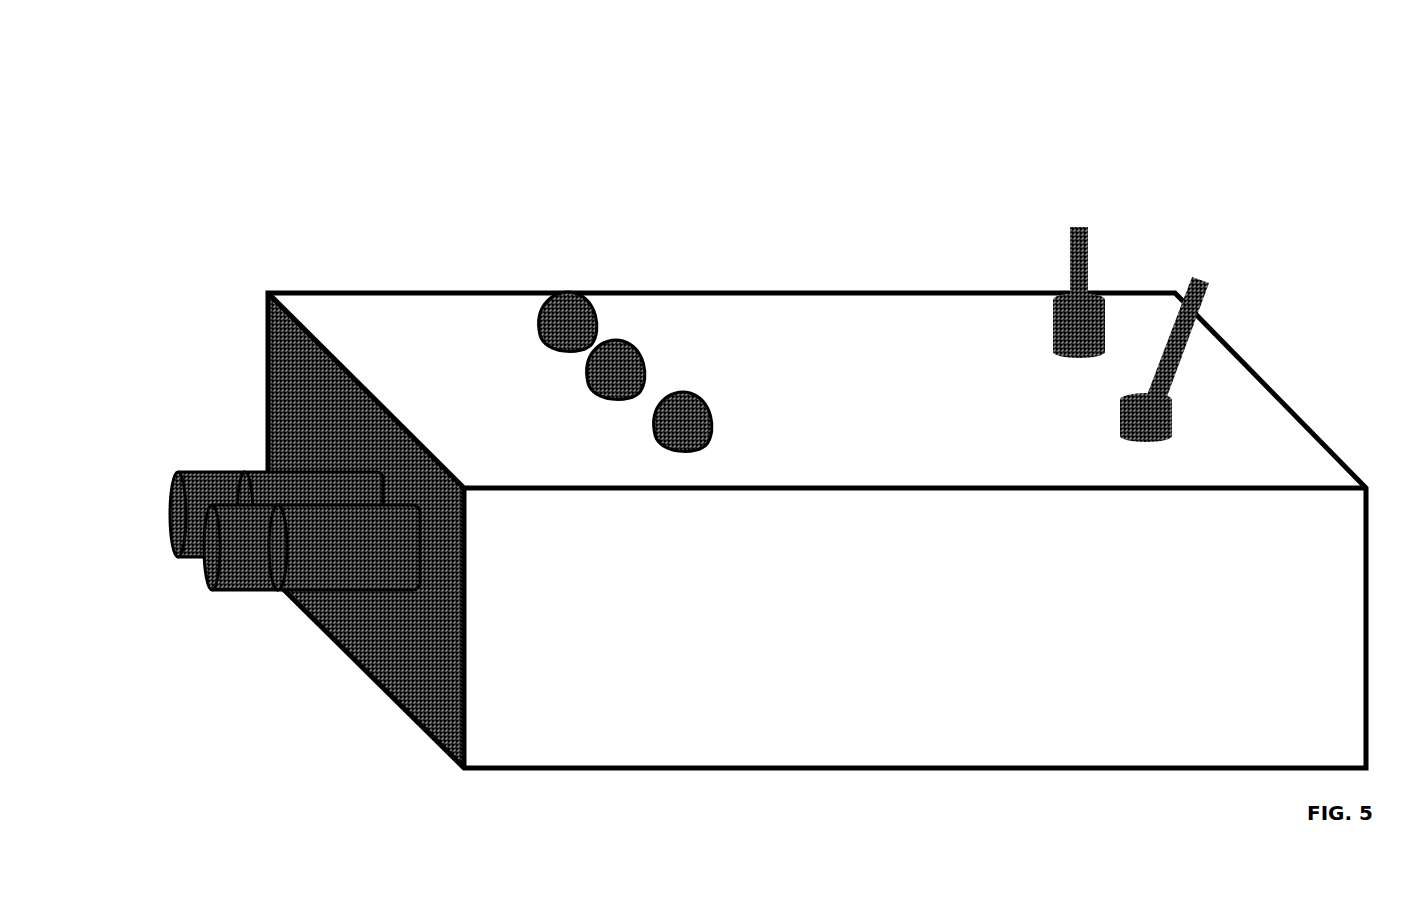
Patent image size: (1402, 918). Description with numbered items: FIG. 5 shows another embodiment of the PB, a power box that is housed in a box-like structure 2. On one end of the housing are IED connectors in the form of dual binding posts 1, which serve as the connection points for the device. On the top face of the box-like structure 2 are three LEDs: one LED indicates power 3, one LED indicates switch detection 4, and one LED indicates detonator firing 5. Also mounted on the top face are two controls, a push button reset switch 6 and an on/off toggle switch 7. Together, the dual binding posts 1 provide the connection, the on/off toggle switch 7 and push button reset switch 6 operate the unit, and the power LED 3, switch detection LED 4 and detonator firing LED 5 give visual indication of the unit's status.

The dual binding posts 1 is at (253, 467).
The box-like structure 2 is at (433, 290).
The power LED 3 is at (565, 305).
The switch detection LED 4 is at (615, 387).
The detonator firing LED 5 is at (658, 403).
The push button reset switch 6 is at (1072, 223).
The on/off toggle switch 7 is at (1170, 353).